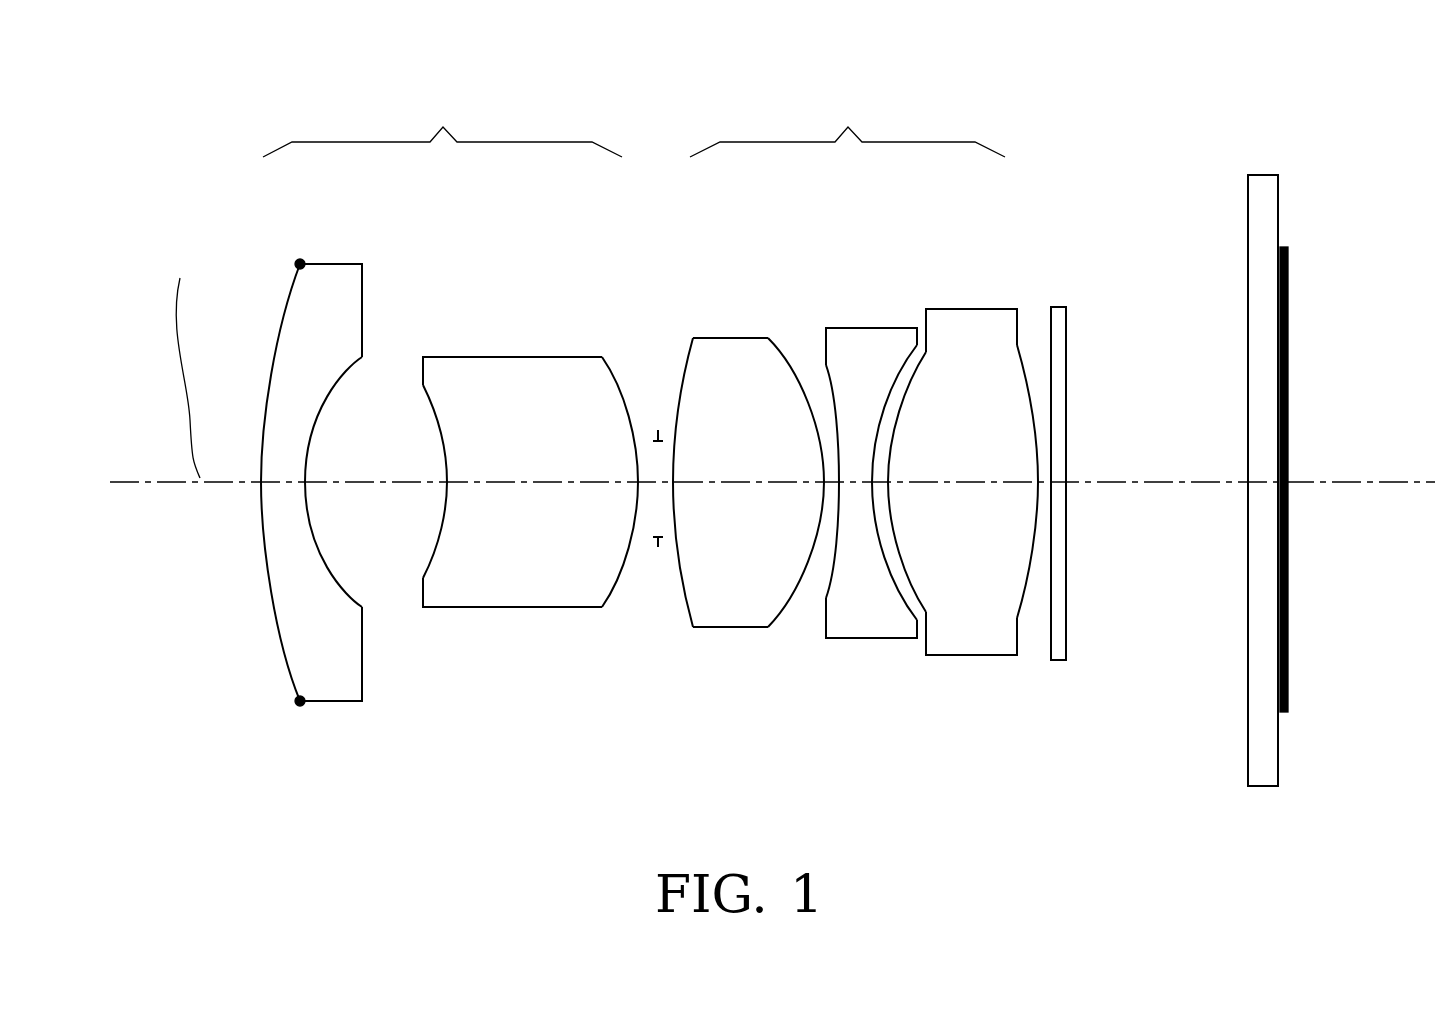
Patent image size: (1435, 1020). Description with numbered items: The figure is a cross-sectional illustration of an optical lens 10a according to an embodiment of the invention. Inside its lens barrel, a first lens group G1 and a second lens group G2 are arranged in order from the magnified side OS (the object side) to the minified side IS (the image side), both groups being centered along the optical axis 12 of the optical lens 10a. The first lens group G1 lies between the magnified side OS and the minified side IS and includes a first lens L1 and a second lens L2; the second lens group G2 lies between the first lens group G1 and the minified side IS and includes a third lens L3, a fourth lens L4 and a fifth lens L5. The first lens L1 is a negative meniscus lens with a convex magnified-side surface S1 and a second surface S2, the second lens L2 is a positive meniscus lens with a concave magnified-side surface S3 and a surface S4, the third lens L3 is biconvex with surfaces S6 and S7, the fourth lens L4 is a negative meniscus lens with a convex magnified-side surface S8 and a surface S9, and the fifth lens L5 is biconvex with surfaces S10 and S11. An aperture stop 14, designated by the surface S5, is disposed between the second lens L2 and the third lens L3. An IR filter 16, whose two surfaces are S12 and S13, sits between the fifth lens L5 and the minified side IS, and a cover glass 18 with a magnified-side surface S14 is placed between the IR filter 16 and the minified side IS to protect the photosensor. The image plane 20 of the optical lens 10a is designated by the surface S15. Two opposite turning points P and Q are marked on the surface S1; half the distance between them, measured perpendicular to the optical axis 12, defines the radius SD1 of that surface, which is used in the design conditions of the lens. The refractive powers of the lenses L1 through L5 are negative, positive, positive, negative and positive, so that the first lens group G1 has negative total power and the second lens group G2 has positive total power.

The optical lens 10a is at (195, 38).
The optical axis 12 is at (182, 359).
The aperture stop 14 is at (658, 430).
The IR filter 16 is at (1079, 485).
The cover glass 18 is at (1271, 442).
The image plane 20 is at (1288, 272).
The first lens group G1 is at (442, 121).
The second lens group G2 is at (847, 121).
The first lens L1 is at (330, 494).
The second lens L2 is at (530, 522).
The third lens L3 is at (748, 496).
The fourth lens L4 is at (874, 500).
The fifth lens L5 is at (963, 471).
The turning point P is at (300, 264).
The turning point Q is at (300, 701).
The magnified side OS is at (126, 166).
The minified side IS is at (1412, 165).
The magnified-side surface of first lens S1 is at (285, 660).
The lens surface of first lens S2 is at (336, 585).
The lens surface of second lens S3 is at (460, 600).
The lens surface of second lens S4 is at (620, 572).
The aperture stop surface S5 is at (658, 547).
The lens surface of third lens S6 is at (690, 607).
The lens surface of third lens S7 is at (795, 600).
The lens surface of fourth lens S8 is at (830, 575).
The lens surface of fourth lens S9 is at (893, 590).
The lens surface of fifth lens S10 is at (905, 572).
The lens surface of fifth lens S11 is at (1025, 582).
The surface of IR filter S12 is at (1051, 630).
The surface of IR filter S13 is at (1066, 630).
The surface of cover glass S14 is at (1248, 670).
The image plane surface S15 is at (1288, 680).